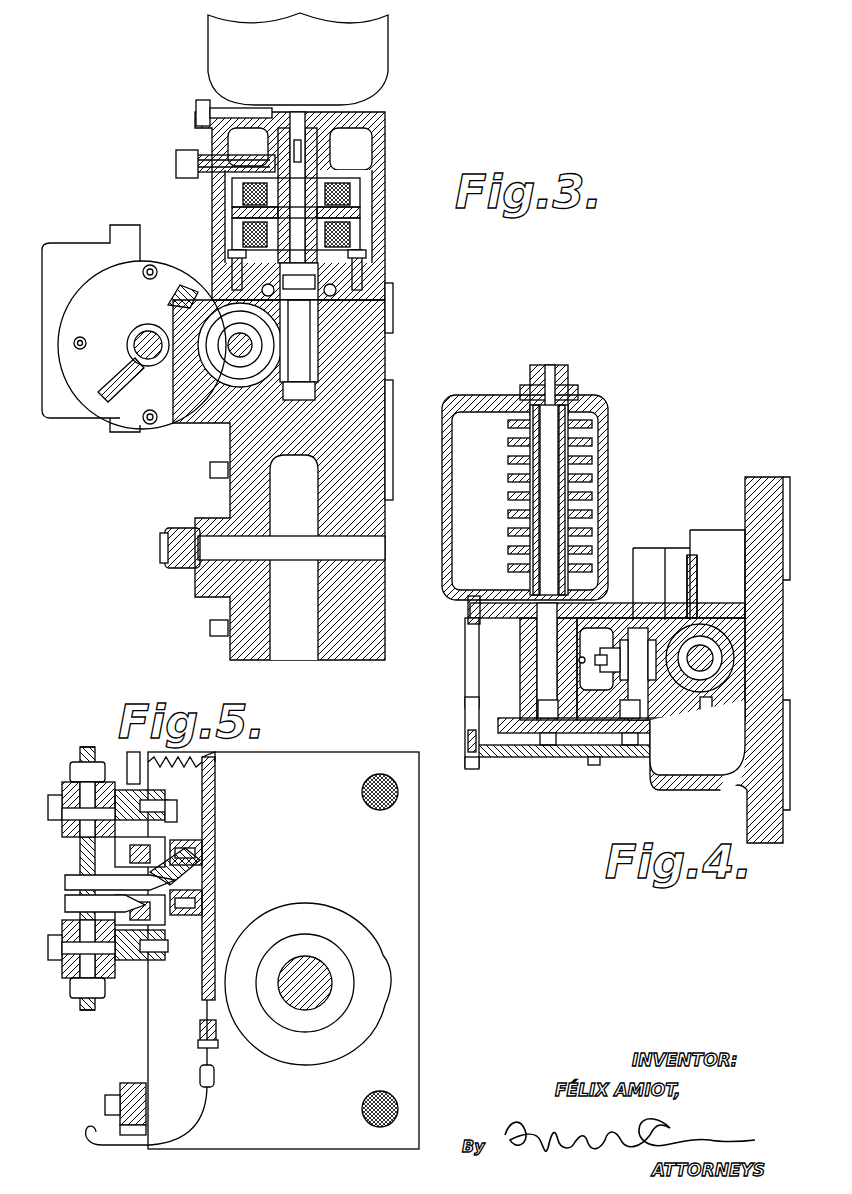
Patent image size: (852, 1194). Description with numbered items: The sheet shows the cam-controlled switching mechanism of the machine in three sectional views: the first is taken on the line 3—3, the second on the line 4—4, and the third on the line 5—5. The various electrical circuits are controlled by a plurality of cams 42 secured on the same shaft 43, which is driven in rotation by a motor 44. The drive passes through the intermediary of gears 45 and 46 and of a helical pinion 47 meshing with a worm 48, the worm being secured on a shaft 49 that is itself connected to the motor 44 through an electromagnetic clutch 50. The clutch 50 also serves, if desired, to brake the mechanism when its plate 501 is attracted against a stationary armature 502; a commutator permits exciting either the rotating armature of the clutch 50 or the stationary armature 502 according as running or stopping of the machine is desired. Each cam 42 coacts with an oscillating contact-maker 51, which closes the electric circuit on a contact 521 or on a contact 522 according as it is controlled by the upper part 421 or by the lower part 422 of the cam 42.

In FIG. 4, the section line 3— 3 is at (700, 500).
In FIG. 3, the section line 4— 4 is at (425, 345).
In FIG. 4, the section line 5— 5 is at (800, 658).
In FIG. 4, the cam 42 is at (590, 432).
In FIG. 5, the cam 42 is at (383, 958).
In FIG. 5, the upper part of the cam 421 is at (355, 925).
In FIG. 5, the lower part of the cam 422 is at (298, 1066).
In FIG. 3, the shaft 43 is at (140, 375).
In FIG. 4, the shaft 43 is at (543, 642).
In FIG. 3, the motor 44 is at (378, 50).
In FIG. 4, the gear 45 is at (572, 735).
In FIG. 4, the gear 46 is at (662, 733).
In FIG. 3, the helical pinion 47 is at (215, 392).
In FIG. 4, the helical pinion 47 is at (648, 640).
In FIG. 3, the worm 48 is at (300, 340).
In FIG. 4, the worm 48 is at (696, 648).
In FIG. 3, the shaft 49 is at (380, 285).
In FIG. 3, the electromagnetic clutch 50 is at (340, 186).
In FIG. 3, the plate of the clutch 501 is at (352, 194).
In FIG. 3, the stationary armature 502 is at (352, 232).
In FIG. 5, the oscillating contact-maker 51 is at (122, 982).
In FIG. 5, the contact 521 is at (100, 905).
In FIG. 5, the contact 522 is at (118, 850).